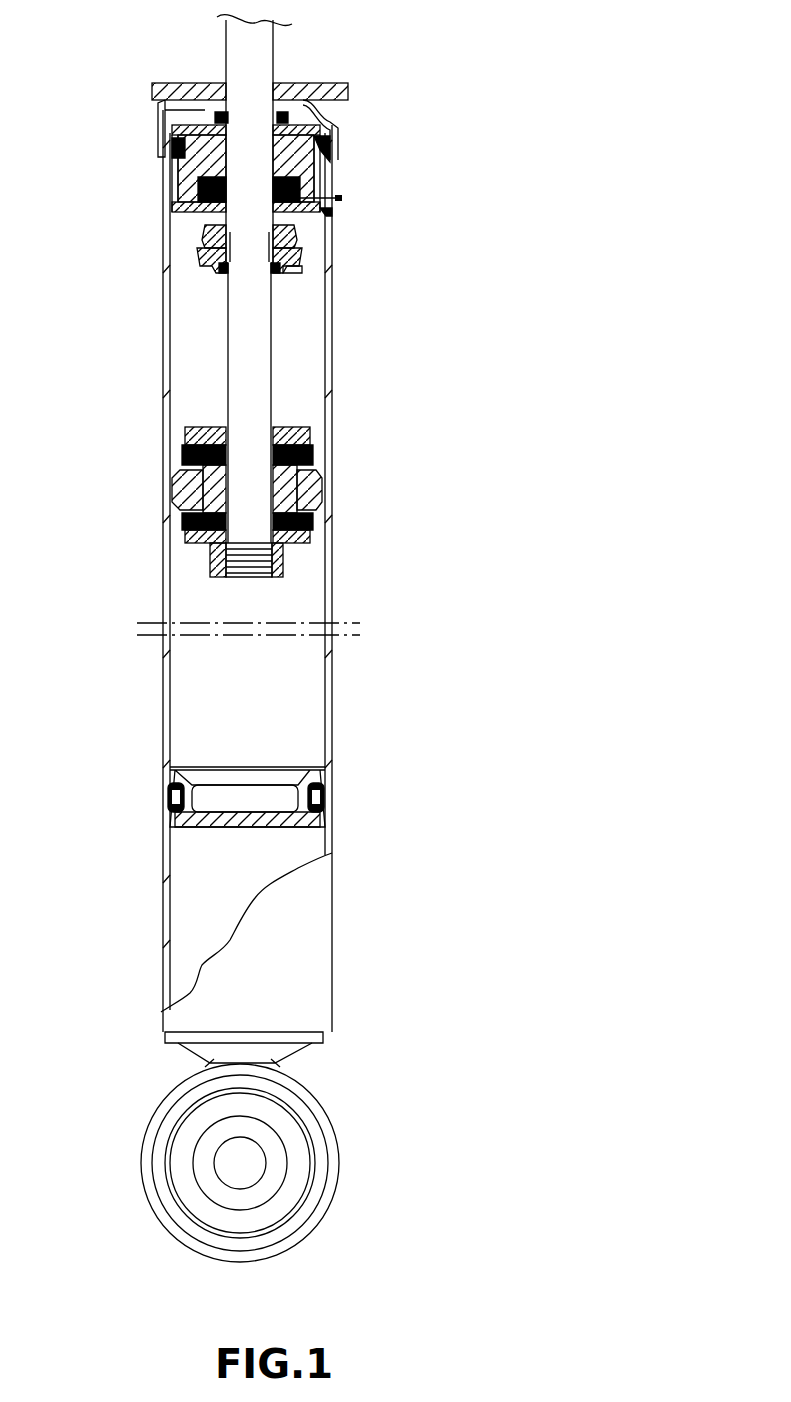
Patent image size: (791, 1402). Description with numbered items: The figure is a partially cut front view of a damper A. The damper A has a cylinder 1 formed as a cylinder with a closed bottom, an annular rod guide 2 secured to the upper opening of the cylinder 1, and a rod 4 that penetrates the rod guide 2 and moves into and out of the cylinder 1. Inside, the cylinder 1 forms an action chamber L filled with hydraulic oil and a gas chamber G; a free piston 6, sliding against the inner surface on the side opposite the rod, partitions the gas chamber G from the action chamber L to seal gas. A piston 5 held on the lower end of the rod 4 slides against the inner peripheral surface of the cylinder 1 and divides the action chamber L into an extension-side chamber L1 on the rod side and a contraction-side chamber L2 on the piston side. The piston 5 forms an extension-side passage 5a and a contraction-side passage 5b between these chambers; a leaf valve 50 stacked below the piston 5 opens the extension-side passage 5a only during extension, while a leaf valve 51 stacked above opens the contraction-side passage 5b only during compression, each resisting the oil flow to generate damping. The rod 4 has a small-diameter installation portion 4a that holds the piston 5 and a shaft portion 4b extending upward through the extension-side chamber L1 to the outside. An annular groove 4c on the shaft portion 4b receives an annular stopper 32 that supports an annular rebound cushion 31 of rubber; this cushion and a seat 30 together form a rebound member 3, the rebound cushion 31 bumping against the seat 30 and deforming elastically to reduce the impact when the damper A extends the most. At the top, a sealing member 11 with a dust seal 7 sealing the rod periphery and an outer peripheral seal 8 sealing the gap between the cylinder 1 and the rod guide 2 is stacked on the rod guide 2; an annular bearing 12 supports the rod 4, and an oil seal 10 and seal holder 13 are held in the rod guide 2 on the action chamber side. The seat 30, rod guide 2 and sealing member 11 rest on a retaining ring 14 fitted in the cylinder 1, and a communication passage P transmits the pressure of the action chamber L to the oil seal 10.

The cylinder 1 is at (328, 705).
The rod guide 2 is at (180, 167).
The rebound member 3 is at (96, 228).
The rod 4 is at (220, 47).
The installation portion 4a is at (212, 553).
The shaft portion 4b is at (265, 333).
The annular groove 4c is at (245, 272).
The piston 5 is at (342, 485).
The extension-side passage 5a is at (197, 485).
The contraction-side passage 5b is at (302, 492).
The free piston 6 is at (173, 773).
The dust seal 7 is at (280, 105).
The outer peripheral seal 8 is at (167, 145).
The oil seal 10 is at (325, 176).
The sealing member 11 is at (158, 110).
The bearing 12 is at (335, 135).
The seal holder 13 is at (200, 190).
The retaining ring 14 is at (326, 212).
The seat 30 is at (200, 232).
The rebound cushion 31 is at (198, 250).
The stopper 32 is at (300, 257).
The leaf valve 50 is at (190, 525).
The leaf valve 51 is at (313, 462).
The damper A is at (390, 77).
The communication passage P is at (342, 198).
The action chamber L is at (297, 404).
The extension-side chamber L1 is at (190, 390).
The contraction-side chamber L2 is at (270, 699).
The gas chamber G is at (250, 899).